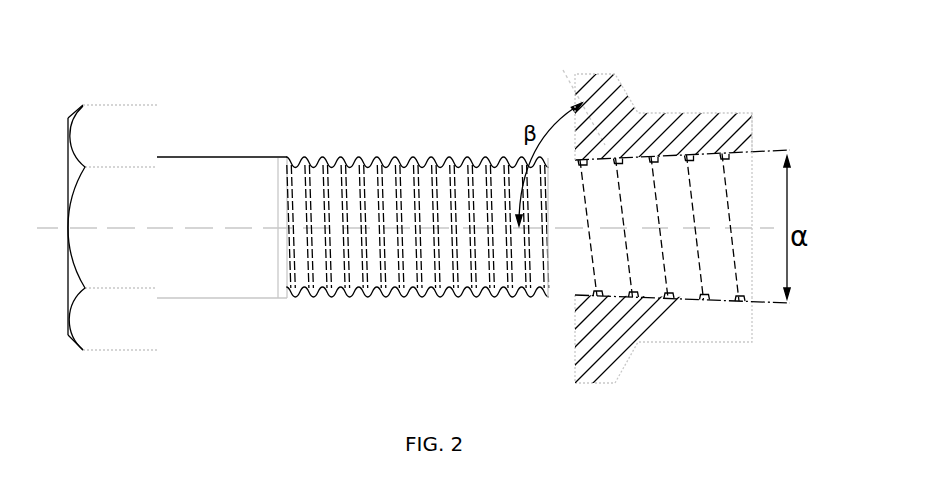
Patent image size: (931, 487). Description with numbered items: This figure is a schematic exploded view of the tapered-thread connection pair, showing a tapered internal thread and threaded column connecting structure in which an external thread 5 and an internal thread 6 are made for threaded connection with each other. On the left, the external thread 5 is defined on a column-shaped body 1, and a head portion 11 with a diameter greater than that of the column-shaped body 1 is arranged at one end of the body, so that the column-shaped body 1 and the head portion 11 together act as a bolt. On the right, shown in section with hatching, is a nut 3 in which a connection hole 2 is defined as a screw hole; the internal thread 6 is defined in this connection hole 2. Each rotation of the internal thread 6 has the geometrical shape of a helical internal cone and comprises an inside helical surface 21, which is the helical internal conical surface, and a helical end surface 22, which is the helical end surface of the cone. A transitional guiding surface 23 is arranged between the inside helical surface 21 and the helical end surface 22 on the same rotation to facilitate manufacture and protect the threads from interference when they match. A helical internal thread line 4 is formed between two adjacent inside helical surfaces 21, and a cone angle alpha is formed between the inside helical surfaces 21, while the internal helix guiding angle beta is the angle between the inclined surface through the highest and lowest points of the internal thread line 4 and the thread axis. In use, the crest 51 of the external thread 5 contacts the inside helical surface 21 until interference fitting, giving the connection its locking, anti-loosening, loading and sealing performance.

The column-shaped body 1 is at (218, 172).
The head portion 11 is at (120, 148).
The external thread 5 is at (350, 248).
The crest 51 is at (399, 267).
The connection hole 2 is at (620, 286).
The inside helical surface 21 is at (673, 160).
The helical end surface 22 is at (702, 160).
The transitional guiding surface 23 is at (727, 158).
The nut 3 is at (757, 155).
The internal thread line 4 is at (693, 269).
The internal thread 6 is at (650, 292).